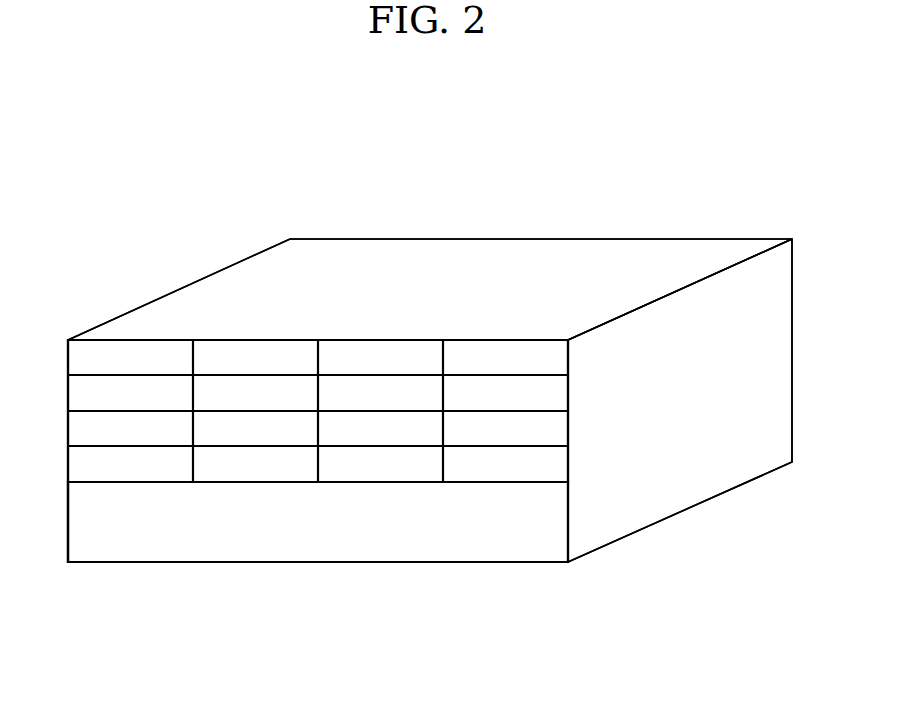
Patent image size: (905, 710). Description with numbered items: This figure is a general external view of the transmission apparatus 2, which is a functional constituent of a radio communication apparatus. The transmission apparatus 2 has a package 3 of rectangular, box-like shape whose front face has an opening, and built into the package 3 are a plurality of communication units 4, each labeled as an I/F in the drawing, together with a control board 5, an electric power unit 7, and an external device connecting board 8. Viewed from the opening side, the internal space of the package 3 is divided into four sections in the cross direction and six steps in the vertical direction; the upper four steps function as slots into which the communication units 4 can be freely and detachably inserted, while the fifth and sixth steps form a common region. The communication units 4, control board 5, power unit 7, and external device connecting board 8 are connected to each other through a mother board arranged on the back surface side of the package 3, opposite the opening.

The transmission apparatus 2 is at (522, 197).
The package 3 is at (644, 258).
The communication units 4 is at (218, 357).
The control board 5 is at (513, 553).
The power unit 7 is at (343, 553).
The external device connecting board 8 is at (177, 553).